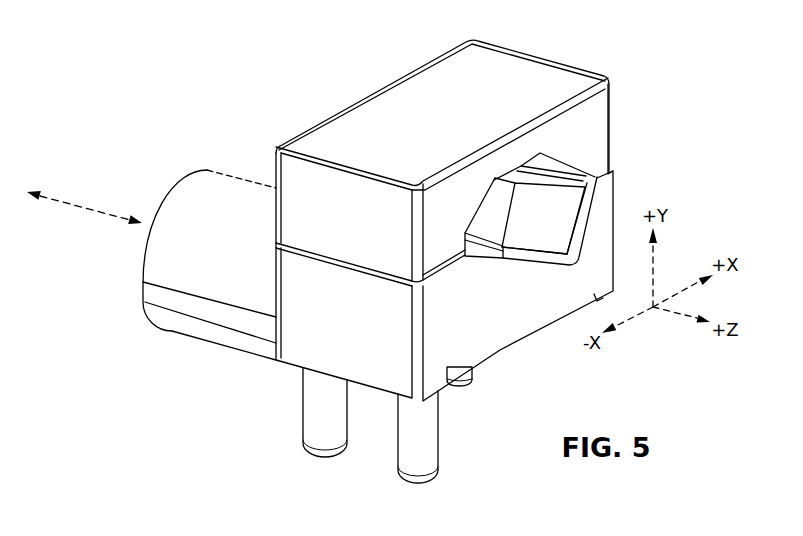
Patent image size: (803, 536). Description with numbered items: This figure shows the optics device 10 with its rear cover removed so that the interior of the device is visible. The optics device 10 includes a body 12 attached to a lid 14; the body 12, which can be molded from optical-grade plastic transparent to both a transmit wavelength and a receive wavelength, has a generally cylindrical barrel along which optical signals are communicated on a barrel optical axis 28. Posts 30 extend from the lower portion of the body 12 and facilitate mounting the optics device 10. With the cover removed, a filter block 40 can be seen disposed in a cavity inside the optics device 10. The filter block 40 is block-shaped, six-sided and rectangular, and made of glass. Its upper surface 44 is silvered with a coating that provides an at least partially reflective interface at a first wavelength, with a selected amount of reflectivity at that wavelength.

The optics device 10 is at (343, 258).
The body 12 is at (613, 124).
The lid 14 is at (541, 59).
The barrel optical axis 28 is at (69, 203).
The posts 30 is at (303, 432).
The filter block 40 is at (572, 200).
The upper surface 44 is at (549, 178).